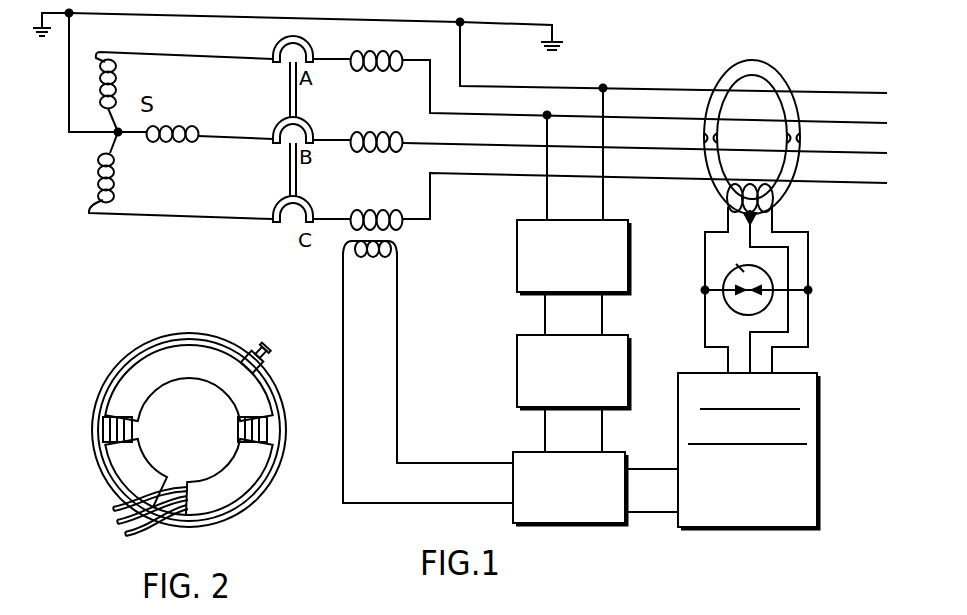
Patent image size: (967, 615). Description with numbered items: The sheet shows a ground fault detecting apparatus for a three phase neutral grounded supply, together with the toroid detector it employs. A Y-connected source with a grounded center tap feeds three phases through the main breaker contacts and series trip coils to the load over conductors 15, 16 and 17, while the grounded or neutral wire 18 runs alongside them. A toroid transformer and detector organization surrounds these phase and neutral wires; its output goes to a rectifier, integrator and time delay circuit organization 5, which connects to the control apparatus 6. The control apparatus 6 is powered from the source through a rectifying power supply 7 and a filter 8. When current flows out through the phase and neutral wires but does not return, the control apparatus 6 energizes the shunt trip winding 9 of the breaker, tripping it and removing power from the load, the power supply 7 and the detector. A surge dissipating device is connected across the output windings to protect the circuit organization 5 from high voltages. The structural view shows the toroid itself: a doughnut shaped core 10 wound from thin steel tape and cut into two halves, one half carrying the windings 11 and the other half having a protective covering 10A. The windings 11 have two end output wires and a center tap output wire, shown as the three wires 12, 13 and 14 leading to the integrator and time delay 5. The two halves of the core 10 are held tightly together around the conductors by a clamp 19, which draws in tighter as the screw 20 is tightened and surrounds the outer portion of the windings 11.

In FIG. 1, the rectifier, integrator and time delay circuit organization 5 is at (812, 373).
In FIG. 1, the control apparatus 6 is at (612, 452).
In FIG. 1, the rectifying power supply 7 is at (612, 220).
In FIG. 1, the filter 8 is at (616, 335).
In FIG. 1, the shunt trip winding 9 is at (375, 258).
In FIG. 1, the core 10 is at (778, 72).
In FIG. 2, the core 10 is at (133, 432).
In FIG. 2, the protective covering 10A is at (150, 393).
In FIG. 1, the windings 11 is at (730, 190).
In FIG. 2, the windings 11 is at (158, 478).
In FIG. 1, the output wire 12 is at (705, 257).
In FIG. 2, the output wire 12 is at (108, 506).
In FIG. 1, the output wire 13 is at (808, 250).
In FIG. 2, the output wire 13 is at (135, 538).
In FIG. 1, the output wire 14 is at (788, 278).
In FIG. 2, the output wire 14 is at (120, 528).
In FIG. 1, the conductor 15 is at (852, 183).
In FIG. 1, the conductor 16 is at (852, 153).
In FIG. 1, the conductor 17 is at (852, 123).
In FIG. 1, the grounded or neutral wire 18 is at (852, 93).
In FIG. 2, the clamp 19 is at (284, 396).
In FIG. 2, the screw 20 is at (270, 353).